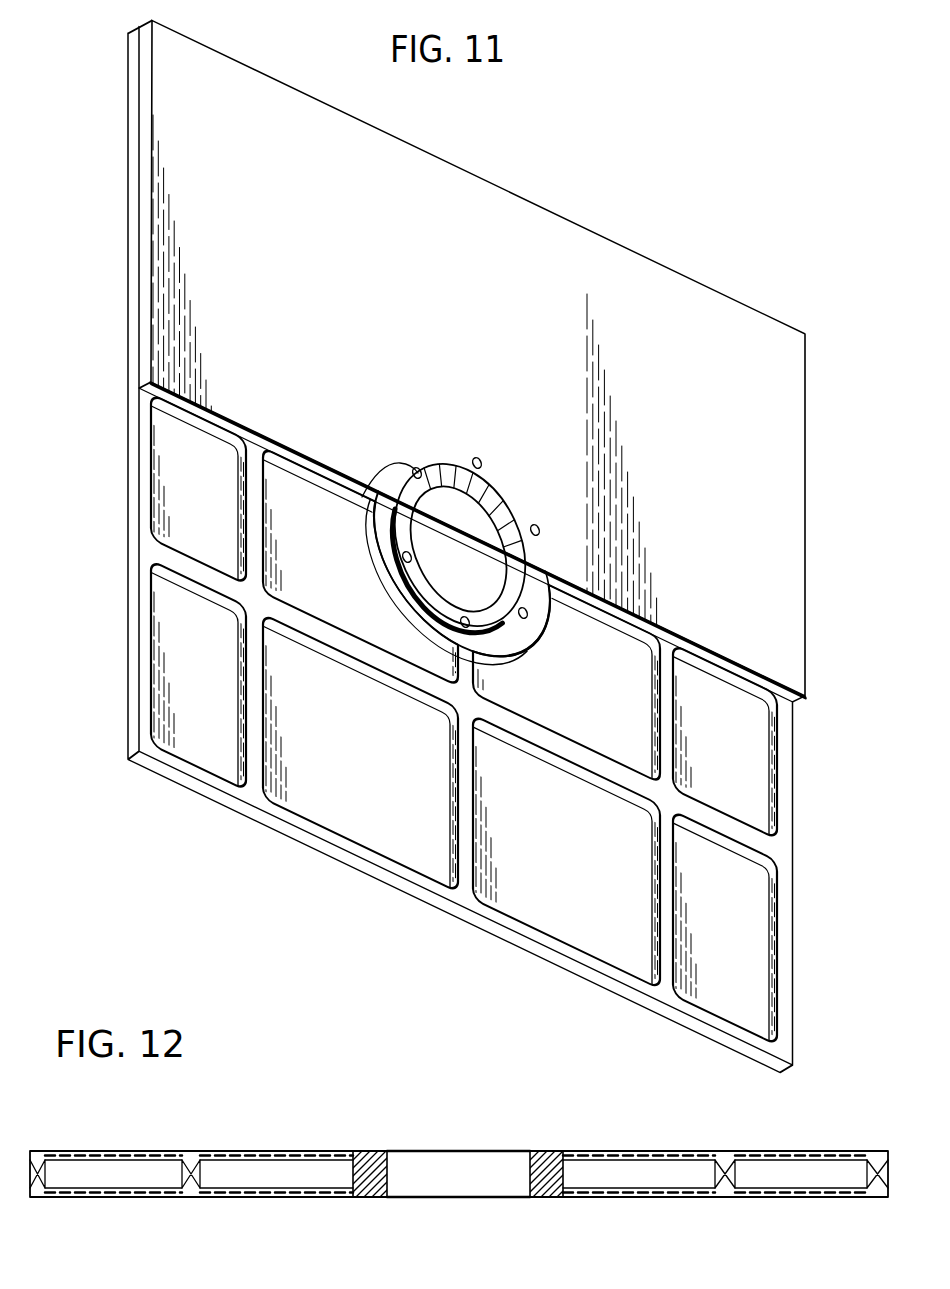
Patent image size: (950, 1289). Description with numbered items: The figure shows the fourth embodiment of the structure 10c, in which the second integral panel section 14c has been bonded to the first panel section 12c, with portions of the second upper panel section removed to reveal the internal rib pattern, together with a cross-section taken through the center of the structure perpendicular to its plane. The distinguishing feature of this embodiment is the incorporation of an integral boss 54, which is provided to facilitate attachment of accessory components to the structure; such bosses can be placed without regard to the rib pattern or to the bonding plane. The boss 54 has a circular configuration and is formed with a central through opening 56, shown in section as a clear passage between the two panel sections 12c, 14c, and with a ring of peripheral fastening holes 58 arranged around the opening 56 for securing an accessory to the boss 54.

In FIG. 11, the fourth embodiment structure 10c is at (509, 543).
In FIG. 12, the fourth embodiment structure 10c is at (459, 1171).
In FIG. 11, the panel section 12c is at (819, 585).
In FIG. 12, the panel section 12c is at (210, 1137).
In FIG. 11, the second face sheet 14c is at (809, 742).
In FIG. 12, the second face sheet 14c is at (210, 1211).
In FIG. 11, the integral boss 54 is at (420, 585).
In FIG. 12, the integral boss 54 is at (360, 1150).
In FIG. 11, the central through opening 56 is at (503, 513).
In FIG. 12, the central through opening 56 is at (388, 1158).
In FIG. 11, the peripheral fastening holes 58 is at (384, 541).